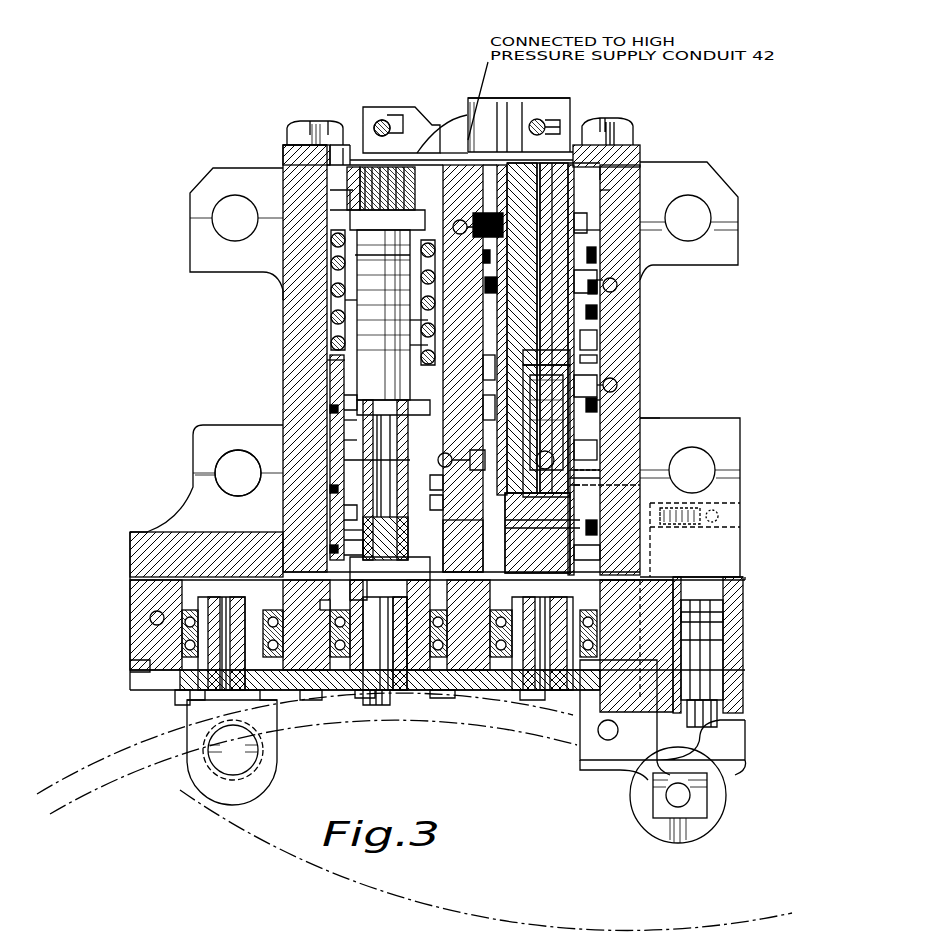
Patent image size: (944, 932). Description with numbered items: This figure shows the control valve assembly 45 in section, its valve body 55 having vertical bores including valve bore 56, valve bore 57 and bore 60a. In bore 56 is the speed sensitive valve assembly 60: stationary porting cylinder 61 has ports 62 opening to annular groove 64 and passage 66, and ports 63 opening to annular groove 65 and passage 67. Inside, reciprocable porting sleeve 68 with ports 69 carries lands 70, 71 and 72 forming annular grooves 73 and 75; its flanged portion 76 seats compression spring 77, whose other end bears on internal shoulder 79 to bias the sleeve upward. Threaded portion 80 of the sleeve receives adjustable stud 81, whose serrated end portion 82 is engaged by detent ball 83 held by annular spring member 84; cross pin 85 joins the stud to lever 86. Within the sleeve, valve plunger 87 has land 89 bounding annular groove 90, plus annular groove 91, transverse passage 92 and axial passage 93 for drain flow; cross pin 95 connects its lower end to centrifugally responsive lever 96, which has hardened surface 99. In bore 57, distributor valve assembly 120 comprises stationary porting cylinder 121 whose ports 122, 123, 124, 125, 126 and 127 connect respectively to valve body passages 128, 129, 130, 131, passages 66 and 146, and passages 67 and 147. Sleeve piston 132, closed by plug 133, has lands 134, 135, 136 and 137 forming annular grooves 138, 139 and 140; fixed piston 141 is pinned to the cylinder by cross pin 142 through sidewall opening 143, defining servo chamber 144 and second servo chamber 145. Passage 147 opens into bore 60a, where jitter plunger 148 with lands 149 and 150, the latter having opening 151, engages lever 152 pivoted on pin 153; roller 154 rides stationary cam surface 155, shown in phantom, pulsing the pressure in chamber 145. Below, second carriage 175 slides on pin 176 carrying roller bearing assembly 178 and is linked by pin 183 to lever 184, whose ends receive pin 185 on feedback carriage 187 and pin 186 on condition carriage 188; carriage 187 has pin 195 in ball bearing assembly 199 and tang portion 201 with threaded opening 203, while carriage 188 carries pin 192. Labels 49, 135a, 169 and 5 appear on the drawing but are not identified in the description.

The control valve assembly 45 is at (226, 140).
The valve body 55 is at (186, 228).
The valve bore 56 is at (350, 150).
The annular spring member 84 is at (343, 160).
The cross pin 85 is at (386, 124).
The serrated end portion 82 is at (405, 137).
The detent ball 83 is at (442, 134).
The lever 86 is at (555, 120).
The sleeve piston 132 is at (532, 100).
The distributor valve assembly 120 is at (620, 116).
The valve bore 57 is at (622, 168).
The land 137 is at (608, 190).
The annular groove 140 is at (606, 210).
The set of ports 122 is at (620, 212).
The flanged portion 76 is at (344, 216).
The compression spring 77 is at (333, 240).
The adjustable stud 81 is at (355, 255).
The porting sleeve 68 is at (350, 300).
The speed sensitive valve assembly 60 is at (292, 345).
The internal shoulder 79 is at (332, 355).
The set of ports 69 is at (336, 397).
The stationary porting cylinder 61 is at (332, 420).
The set of ports 62 is at (338, 440).
The annular groove 64 is at (410, 460).
The set of ports 63 is at (338, 512).
The annular groove 65 is at (345, 522).
The annular groove 73 is at (340, 545).
The land 70 is at (340, 562).
The land 71 is at (206, 478).
The valve body passage 146 is at (238, 473).
The low pressure supply conduit 49 is at (196, 478).
The land 89 is at (418, 290).
The threaded portion 80 is at (430, 300).
The valve body passage 130 is at (435, 320).
The annular groove 90 is at (435, 345).
The valve body passage 128 is at (460, 220).
The land 72 is at (480, 365).
The annular groove 75 is at (480, 398).
The passage 66 is at (452, 455).
The transverse passage 92 is at (436, 482).
The annular groove 91 is at (436, 503).
The passage 67 is at (467, 540).
The plug 133 is at (537, 374).
The fixed piston 141 is at (546, 364).
The cross pin 142 is at (545, 452).
The land 136 is at (592, 274).
The set of ports 123 is at (604, 235).
The valve body passage 129 is at (600, 280).
The stationary porting cylinder 121 is at (602, 308).
The annular groove 139 is at (600, 340).
The set of ports 124 is at (605, 356).
The land 135 is at (616, 380).
The set of ports 125 is at (630, 388).
The valve body passage 131 is at (628, 397).
The passage 135a is at (663, 406).
The set of ports 126 is at (592, 452).
The annular groove 138 is at (640, 445).
The sidewall opening 143 is at (600, 474).
The servo chamber 144 is at (603, 486).
The land 134 is at (690, 497).
The valve body passage 147 is at (650, 530).
The set of ports 127 is at (600, 528).
The second servo chamber 145 is at (592, 555).
The hardened surface 99 is at (390, 578).
The axially extending passage 93 is at (393, 480).
The valve plunger 87 is at (322, 605).
The centrifugally responsive lever 96 is at (372, 632).
The cross pin 95 is at (400, 635).
The roller bearing assembly 178 is at (448, 616).
The pin 176 is at (448, 640).
The block 169 is at (600, 603).
The transversely extending pin 192 is at (592, 628).
The opening 151 is at (780, 593).
The land 150 is at (690, 630).
The jitter plunger 148 is at (720, 640).
The bore 60a is at (715, 660).
The land 149 is at (720, 695).
The ball bearing assembly 199 is at (148, 612).
The transversely extending pin 195 is at (185, 638).
The feedback carriage 187 is at (182, 696).
The pin 185 is at (215, 700).
The lever 184 is at (315, 700).
The pin 183 is at (370, 700).
The second carriage 175 is at (462, 726).
The pin 186 is at (528, 700).
The condition carriage 188 is at (575, 660).
The lever 152 is at (780, 737).
The pin 153 is at (608, 742).
The roller 154 is at (722, 790).
The stationary cam surface 155 is at (726, 866).
The threaded opening 203 is at (260, 752).
The tang portion 201 is at (215, 770).
The section line 5 is at (500, 838).